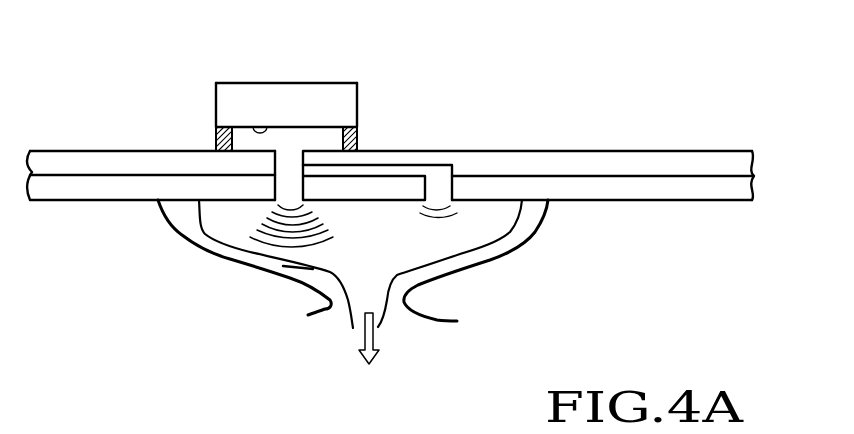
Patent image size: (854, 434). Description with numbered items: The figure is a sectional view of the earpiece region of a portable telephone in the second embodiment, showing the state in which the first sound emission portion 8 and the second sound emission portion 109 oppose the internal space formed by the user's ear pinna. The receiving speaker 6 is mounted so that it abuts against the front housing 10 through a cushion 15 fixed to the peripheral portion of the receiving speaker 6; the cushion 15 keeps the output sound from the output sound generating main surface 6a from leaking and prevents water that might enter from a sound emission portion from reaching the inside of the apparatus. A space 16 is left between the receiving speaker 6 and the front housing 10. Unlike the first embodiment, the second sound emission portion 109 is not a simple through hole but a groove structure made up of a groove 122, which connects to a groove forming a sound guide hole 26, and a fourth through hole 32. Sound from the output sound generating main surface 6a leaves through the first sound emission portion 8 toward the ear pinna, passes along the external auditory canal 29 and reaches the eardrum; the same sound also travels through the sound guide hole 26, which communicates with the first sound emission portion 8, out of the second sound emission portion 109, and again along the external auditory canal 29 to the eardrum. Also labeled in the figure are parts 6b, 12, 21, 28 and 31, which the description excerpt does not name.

The receiving speaker 6 is at (221, 110).
The output sound generating main surface 6a is at (262, 125).
The tool upper surface 6b is at (285, 83).
The first sound emission portion 8 is at (147, 240).
The front housing 10 is at (87, 155).
The first panel lower layer 12 is at (72, 200).
The cushion 15 is at (360, 137).
The space 16 is at (292, 157).
The horn portion 21 is at (297, 158).
The sound guide hole 26 is at (397, 167).
The horn left wall 28 is at (248, 265).
The external auditory canal 29 is at (370, 298).
The horn portion 31 is at (297, 190).
The fourth through hole 32 is at (438, 190).
The second sound emission portion 109 is at (515, 58).
The groove 122 is at (438, 173).